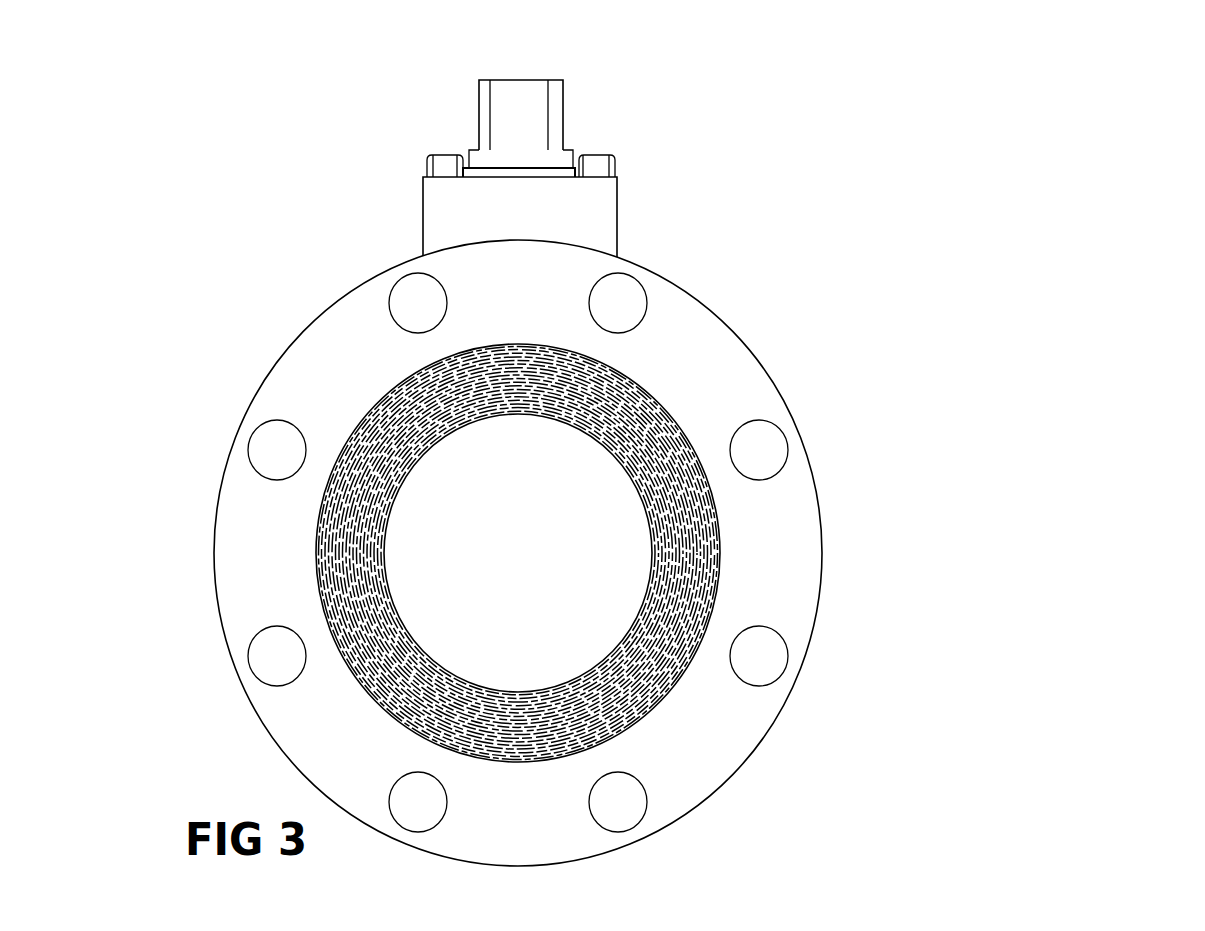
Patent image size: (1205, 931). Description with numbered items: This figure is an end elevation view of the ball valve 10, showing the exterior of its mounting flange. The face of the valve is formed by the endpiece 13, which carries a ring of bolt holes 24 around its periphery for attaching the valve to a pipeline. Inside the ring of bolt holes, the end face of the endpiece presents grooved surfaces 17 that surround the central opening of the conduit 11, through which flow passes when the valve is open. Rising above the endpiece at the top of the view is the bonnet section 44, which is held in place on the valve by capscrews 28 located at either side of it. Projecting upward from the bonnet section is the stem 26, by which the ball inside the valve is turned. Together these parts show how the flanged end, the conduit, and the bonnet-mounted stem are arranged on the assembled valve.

The valve 10 is at (345, 145).
The conduit 11 is at (482, 685).
The endpiece 13 is at (790, 416).
The grooved surfaces 17 is at (660, 678).
The bolt holes 24 is at (787, 463).
The stem 26 is at (528, 80).
The capscrews 28 is at (615, 166).
The bonnet section 44 is at (617, 218).